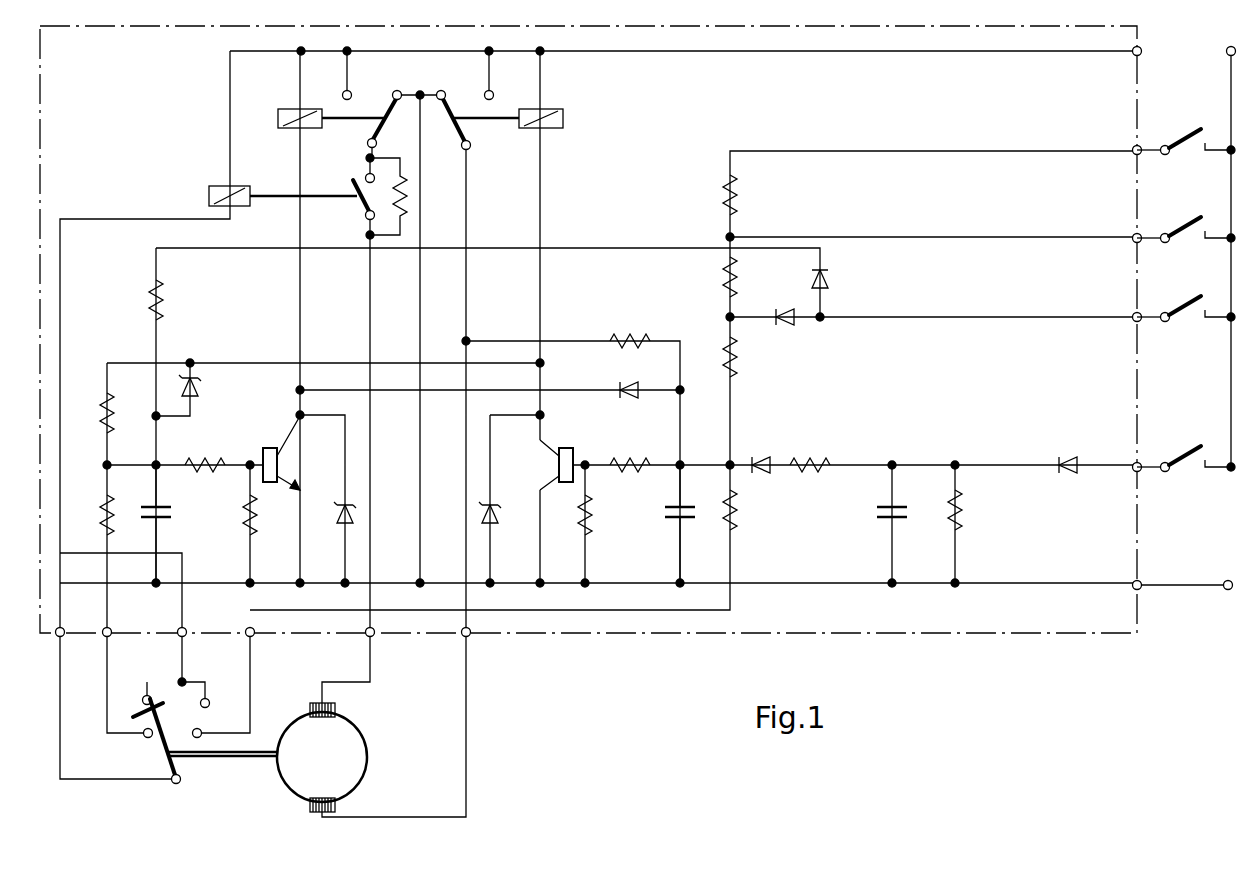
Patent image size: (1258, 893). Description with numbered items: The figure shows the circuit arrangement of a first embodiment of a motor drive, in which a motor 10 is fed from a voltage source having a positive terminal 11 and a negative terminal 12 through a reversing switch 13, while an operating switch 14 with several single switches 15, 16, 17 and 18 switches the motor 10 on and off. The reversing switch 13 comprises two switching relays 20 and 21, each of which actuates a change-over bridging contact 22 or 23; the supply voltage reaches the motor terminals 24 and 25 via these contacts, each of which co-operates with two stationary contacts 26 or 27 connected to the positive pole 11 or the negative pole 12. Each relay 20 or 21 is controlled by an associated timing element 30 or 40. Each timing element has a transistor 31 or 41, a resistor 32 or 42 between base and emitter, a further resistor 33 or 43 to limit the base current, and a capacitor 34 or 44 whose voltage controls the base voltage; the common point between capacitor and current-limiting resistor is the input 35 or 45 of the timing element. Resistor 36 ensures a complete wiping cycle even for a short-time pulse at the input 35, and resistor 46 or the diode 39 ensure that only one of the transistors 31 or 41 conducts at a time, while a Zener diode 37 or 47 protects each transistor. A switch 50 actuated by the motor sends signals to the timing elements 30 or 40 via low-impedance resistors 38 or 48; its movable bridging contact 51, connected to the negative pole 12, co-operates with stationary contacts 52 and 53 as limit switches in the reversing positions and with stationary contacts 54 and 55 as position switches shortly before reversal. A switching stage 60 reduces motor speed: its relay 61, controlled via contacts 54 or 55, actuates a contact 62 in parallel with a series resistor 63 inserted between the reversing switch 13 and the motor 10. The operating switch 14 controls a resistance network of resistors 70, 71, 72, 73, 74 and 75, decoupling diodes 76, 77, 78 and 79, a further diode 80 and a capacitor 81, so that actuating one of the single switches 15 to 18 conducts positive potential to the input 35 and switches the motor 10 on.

The motor 10 is at (336, 739).
The positive terminal 11 is at (1208, 40).
The negative terminal 12 is at (1228, 610).
The reversing switch 13 is at (513, 113).
The operating switch 14 is at (1184, 110).
The single switch 15 is at (1175, 178).
The single switch 16 is at (1184, 250).
The single switch 17 is at (1184, 330).
The single switch 18 is at (1184, 442).
The switching relay 20 is at (324, 138).
The switching relay 21 is at (558, 142).
The change-over bridging contact 22 is at (448, 129).
The change-over bridging contact 23 is at (390, 128).
The motor terminal 24 is at (309, 691).
The motor terminal 25 is at (353, 795).
The stationary contact 26 is at (510, 75).
The stationary contact 27 is at (436, 76).
The timing element 30 is at (628, 422).
The transistor 31 is at (556, 480).
The resistor 32 is at (606, 515).
The resistor 33 is at (630, 444).
The capacitor 34 is at (668, 524).
The input 35 is at (703, 439).
The resistor 36 is at (649, 320).
The Zener diode 37 is at (503, 533).
The resistor 38 is at (750, 513).
The diode 39 is at (648, 375).
The timing element 40 is at (275, 436).
The transistor 41 is at (316, 466).
The resistor 42 is at (232, 527).
The resistor 43 is at (195, 448).
The capacitor 44 is at (175, 524).
The input 45 is at (137, 442).
The resistor 46 is at (89, 397).
The Zener diode 47 is at (332, 534).
The resistor 48 is at (89, 520).
The switch 50 is at (191, 735).
The movable bridging contact 51 is at (156, 741).
The stationary contact 52 is at (129, 747).
The stationary contact 53 is at (220, 720).
The stationary contact 54 is at (132, 682).
The stationary contact 55 is at (220, 683).
The switching stage 60 is at (300, 179).
The relay 61 is at (283, 213).
The contact 62 is at (346, 199).
The series resistor 63 is at (416, 196).
The resistor 70 is at (757, 193).
The resistor 71 is at (755, 277).
The resistor 72 is at (755, 357).
The resistor 73 is at (183, 299).
The resistor 74 is at (810, 445).
The resistor 75 is at (939, 525).
The diode 76 is at (845, 274).
The diode 77 is at (815, 333).
The diode 78 is at (209, 402).
The diode 79 is at (758, 446).
The diode 80 is at (1077, 492).
The capacitor 81 is at (880, 533).